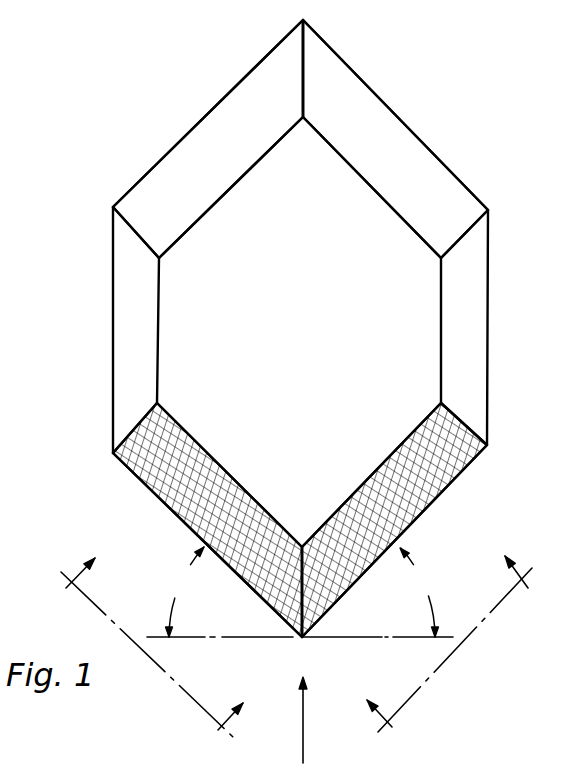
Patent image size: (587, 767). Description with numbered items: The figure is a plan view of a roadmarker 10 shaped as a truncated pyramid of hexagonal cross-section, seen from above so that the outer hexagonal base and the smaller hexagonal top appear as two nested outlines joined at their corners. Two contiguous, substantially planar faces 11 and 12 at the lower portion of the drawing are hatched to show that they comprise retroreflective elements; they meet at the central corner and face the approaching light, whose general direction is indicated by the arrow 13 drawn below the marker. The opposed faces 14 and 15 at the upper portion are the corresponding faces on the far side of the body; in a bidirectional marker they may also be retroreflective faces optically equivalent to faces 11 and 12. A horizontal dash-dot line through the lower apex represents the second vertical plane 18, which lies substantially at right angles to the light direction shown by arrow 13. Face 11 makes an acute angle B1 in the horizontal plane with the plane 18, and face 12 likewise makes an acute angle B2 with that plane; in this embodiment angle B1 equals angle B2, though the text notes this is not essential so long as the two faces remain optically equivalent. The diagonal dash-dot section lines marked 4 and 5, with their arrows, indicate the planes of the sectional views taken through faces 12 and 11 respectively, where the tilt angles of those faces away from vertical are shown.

The roadmarker 10 is at (491, 296).
The retroreflective face 11 is at (150, 463).
The retroreflective face 12 is at (455, 467).
The arrow 13 is at (303, 727).
The opposed face 14 is at (233, 105).
The opposed face 15 is at (372, 111).
The second vertical plane 18 is at (253, 638).
The acute angle B1 is at (185, 592).
The acute angle B2 is at (419, 592).
The section line 4- 4 is at (163, 636).
The section line 5- 5 is at (436, 629).